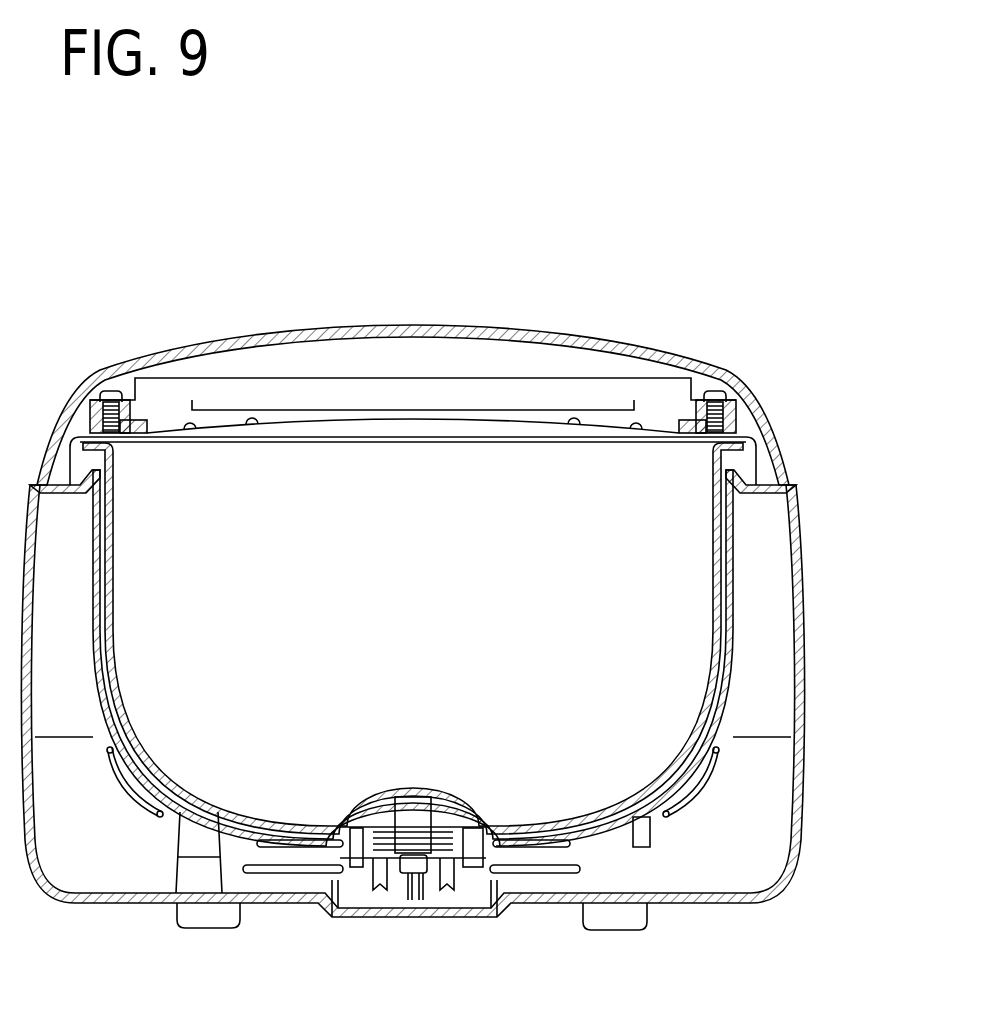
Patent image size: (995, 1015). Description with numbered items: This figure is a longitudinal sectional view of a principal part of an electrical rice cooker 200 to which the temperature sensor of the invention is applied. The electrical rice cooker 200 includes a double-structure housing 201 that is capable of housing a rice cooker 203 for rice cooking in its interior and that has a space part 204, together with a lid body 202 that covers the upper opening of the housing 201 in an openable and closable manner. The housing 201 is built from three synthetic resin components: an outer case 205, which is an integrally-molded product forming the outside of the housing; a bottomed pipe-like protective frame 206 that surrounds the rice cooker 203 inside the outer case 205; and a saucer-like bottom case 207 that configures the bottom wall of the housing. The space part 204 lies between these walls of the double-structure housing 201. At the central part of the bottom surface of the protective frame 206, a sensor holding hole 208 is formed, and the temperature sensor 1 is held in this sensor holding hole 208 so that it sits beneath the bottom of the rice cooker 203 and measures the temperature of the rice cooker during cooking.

The electrical rice cooker 200 is at (610, 292).
The housing 201 is at (803, 653).
The lid body 202 is at (692, 360).
The rice cooker 203 is at (712, 527).
The space part 204 is at (757, 838).
The outer case 205 is at (800, 546).
The protective frame 206 is at (727, 708).
The bottom case 207 is at (532, 907).
The sensor holding hole 208 is at (405, 810).
The temperature sensor 1 is at (430, 867).